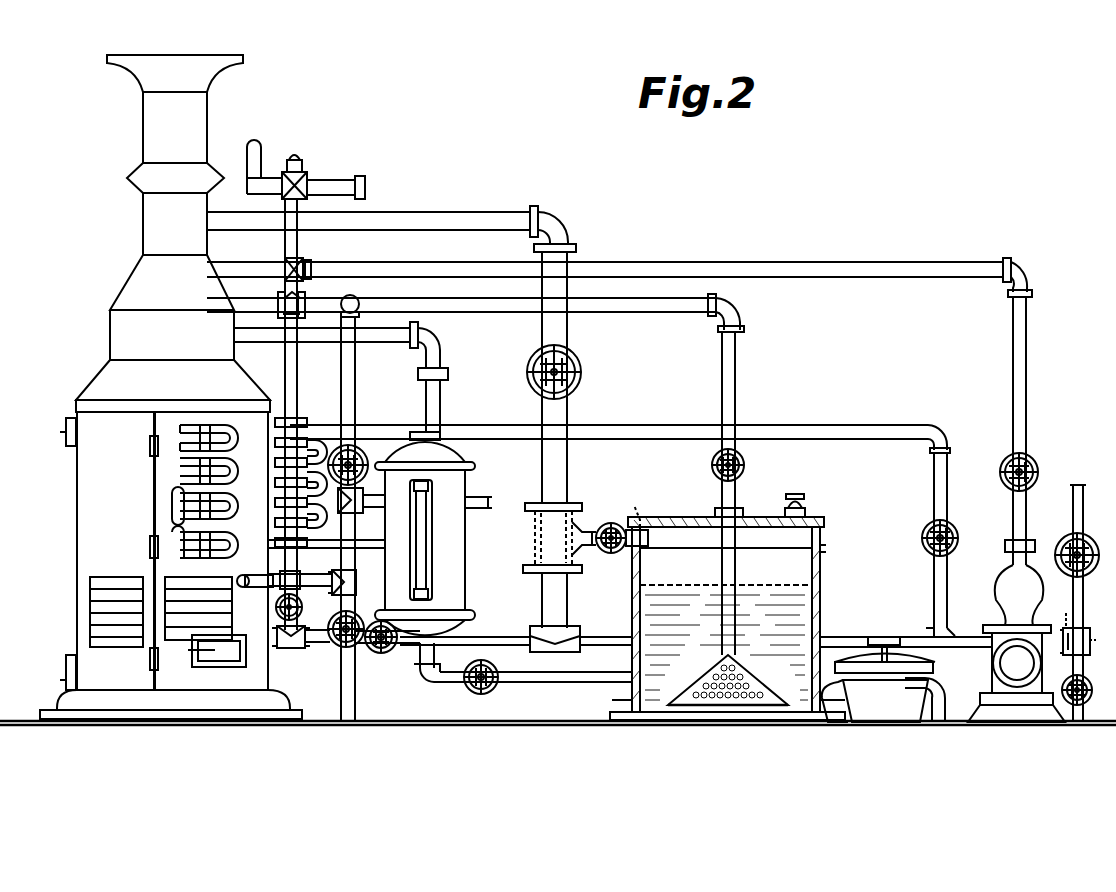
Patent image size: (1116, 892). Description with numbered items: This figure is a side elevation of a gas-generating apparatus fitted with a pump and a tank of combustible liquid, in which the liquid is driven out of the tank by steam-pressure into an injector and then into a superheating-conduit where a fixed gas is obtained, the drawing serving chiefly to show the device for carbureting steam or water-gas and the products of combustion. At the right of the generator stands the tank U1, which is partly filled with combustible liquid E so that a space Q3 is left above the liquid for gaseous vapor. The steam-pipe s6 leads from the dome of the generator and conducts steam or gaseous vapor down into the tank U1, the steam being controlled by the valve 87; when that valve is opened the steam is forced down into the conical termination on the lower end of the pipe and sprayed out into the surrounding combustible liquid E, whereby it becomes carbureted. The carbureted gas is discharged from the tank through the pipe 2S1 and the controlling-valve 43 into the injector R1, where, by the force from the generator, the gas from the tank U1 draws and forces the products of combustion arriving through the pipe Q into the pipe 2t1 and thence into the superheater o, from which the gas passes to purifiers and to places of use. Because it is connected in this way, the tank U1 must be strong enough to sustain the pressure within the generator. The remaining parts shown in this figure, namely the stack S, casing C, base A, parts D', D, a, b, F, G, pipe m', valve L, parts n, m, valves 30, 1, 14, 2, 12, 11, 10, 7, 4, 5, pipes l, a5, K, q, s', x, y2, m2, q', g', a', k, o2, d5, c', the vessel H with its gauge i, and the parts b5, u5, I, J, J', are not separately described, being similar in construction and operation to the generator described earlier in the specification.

The smoke stack S is at (173, 227).
The furnace casing C is at (173, 545).
The base A is at (171, 703).
The upper door handle D' is at (48, 429).
The lower door handle D is at (52, 672).
The door rod a is at (141, 551).
The grate b is at (161, 612).
The fire door F is at (217, 664).
The heating coil G is at (222, 518).
The coil supply pipe m' is at (301, 415).
The valve L is at (308, 172).
The vent pipe n is at (264, 167).
The pipe m is at (336, 185).
The pipe Q is at (403, 409).
The valve 30 is at (566, 372).
The pipe l is at (623, 403).
The valve a5 is at (303, 261).
The valve 1 is at (1026, 472).
The steam-pipe s6 is at (475, 473).
The valve 87 is at (741, 465).
The pipe K is at (350, 377).
The pipe q is at (358, 519).
The valve 14 is at (356, 469).
The superheater o is at (637, 527).
The valve 2 is at (945, 538).
The receiver H is at (433, 533).
The gauge glass i is at (427, 540).
The pipe s' is at (478, 492).
The valve x is at (300, 580).
The valve y2 is at (352, 582).
The valve 12 is at (299, 607).
The valve m2 is at (301, 646).
The valve 11 is at (333, 629).
The valve 10 is at (387, 643).
The pipe q' is at (400, 671).
The pipe g' is at (516, 628).
The pipe 2t1 is at (564, 629).
The pipe a' is at (704, 688).
The valve 7 is at (483, 684).
The injector R1 is at (570, 527).
The controlling-valve 43 is at (620, 549).
The pipe 2S1 is at (650, 512).
The combustible liquid E is at (727, 618).
The perforated cone b5 is at (728, 680).
The cock u5 is at (795, 493).
The space for gaseous vapor Q3 is at (762, 571).
The tank U1 is at (836, 549).
The tub I is at (878, 679).
The pump J is at (1017, 629).
The pump base J' is at (1016, 707).
The pipe k is at (1066, 603).
The valve 4 is at (1082, 555).
The valve o2 is at (1086, 641).
The valve d5 is at (1057, 614).
The valve 5 is at (1086, 690).
The pipe c' is at (1089, 710).